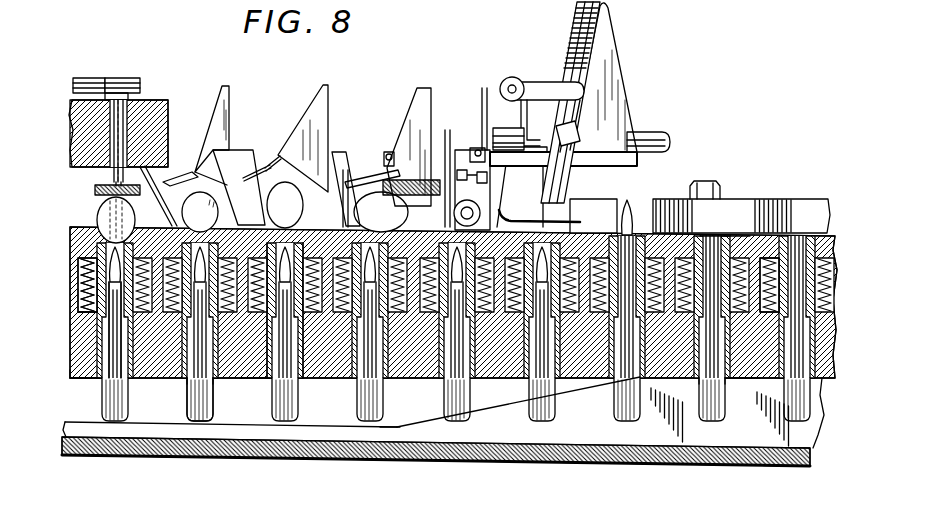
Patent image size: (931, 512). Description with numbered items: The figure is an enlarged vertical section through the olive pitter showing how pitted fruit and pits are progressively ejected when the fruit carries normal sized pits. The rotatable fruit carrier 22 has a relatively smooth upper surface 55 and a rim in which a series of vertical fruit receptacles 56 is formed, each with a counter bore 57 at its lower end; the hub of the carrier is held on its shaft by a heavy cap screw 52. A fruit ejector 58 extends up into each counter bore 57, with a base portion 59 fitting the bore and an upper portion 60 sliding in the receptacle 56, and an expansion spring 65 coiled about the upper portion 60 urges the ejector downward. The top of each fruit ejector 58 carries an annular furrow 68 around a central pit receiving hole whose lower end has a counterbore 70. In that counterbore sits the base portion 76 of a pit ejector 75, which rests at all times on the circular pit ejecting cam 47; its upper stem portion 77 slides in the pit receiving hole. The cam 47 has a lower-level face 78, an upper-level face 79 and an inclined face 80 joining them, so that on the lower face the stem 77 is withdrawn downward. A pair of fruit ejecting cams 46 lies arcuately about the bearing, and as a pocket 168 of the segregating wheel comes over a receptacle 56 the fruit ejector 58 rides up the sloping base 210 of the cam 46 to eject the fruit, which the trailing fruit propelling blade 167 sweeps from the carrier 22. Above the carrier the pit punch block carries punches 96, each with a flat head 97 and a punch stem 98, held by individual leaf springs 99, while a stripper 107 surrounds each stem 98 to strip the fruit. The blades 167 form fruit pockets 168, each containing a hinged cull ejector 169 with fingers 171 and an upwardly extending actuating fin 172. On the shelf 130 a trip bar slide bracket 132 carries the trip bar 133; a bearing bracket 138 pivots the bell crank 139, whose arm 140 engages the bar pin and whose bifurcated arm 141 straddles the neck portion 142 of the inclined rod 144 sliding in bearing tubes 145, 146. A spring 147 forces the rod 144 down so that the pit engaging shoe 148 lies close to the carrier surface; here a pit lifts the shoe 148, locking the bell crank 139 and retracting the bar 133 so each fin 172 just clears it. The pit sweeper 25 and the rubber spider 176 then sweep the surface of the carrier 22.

The rotatable fruit carrier 22 is at (761, 240).
The pit sweeper 25 is at (753, 193).
The fruit ejecting cam 46 is at (333, 390).
The pit ejecting cam 47 is at (427, 427).
The cap screw 52 is at (632, 467).
The upper surface of carrier 55 is at (587, 230).
The fruit receptacle 56 is at (200, 212).
The counter bore 57 is at (90, 298).
The fruit ejector 58 is at (80, 364).
The base portion 59 is at (92, 382).
The upper portion 60 is at (90, 268).
The expansion spring 65 is at (92, 317).
The annular furrow 68 is at (722, 236).
The counterbore 70 is at (77, 350).
The pit ejector 75 is at (185, 391).
The base portion 76 is at (193, 378).
The upper stem portion 77 is at (104, 340).
The lower-level face 78 is at (252, 421).
The upper-level face 79 is at (643, 381).
The inclined face 80 is at (518, 402).
The punch 96 is at (127, 95).
The head 97 is at (113, 92).
The punch stem 98 is at (137, 188).
The leaf spring 99 is at (94, 80).
The stripper 107 is at (95, 189).
The shelf 130 is at (616, 163).
The trip bar slide bracket 132 is at (660, 134).
The trip bar 133 is at (495, 135).
The bearing bracket 138 is at (514, 77).
The bell crank 139 is at (540, 85).
The arm 140 is at (512, 120).
The bifurcated arm 141 is at (587, 90).
The neck portion 142 is at (577, 115).
The rod 144 is at (570, 135).
The bearing tube 145 is at (578, 30).
The bearing tube 146 is at (563, 137).
The spring 147 is at (612, 22).
The pit engaging shoe 148 is at (520, 216).
The fruit propelling blade 167 is at (236, 150).
The fruit pocket 168 is at (258, 172).
The cull ejector 169 is at (390, 152).
The finger 171 is at (178, 170).
The actuating fin 172 is at (224, 86).
The spider 176 is at (668, 197).
The sloping base 210 is at (258, 380).